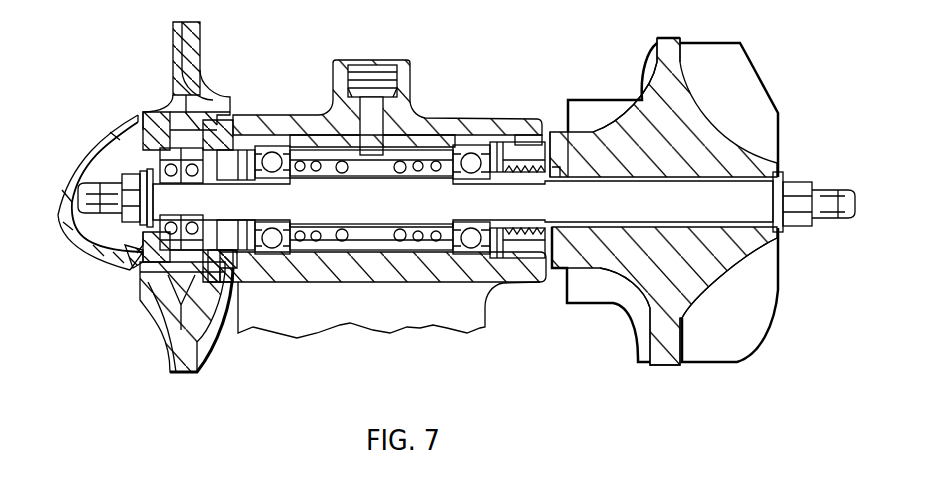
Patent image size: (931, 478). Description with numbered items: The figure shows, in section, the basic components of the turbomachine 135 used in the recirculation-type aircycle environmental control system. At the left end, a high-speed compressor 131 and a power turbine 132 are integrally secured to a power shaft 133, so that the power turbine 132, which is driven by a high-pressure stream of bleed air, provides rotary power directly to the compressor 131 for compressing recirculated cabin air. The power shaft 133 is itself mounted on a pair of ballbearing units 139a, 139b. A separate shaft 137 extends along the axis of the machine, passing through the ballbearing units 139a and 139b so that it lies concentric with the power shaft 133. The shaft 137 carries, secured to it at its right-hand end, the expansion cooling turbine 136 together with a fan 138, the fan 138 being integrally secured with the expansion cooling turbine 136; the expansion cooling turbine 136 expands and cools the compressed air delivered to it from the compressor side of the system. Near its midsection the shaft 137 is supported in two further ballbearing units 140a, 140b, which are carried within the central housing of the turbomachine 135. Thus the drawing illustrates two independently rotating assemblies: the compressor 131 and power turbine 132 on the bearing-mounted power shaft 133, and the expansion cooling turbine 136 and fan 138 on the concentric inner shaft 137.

The high-speed compressor 131 is at (177, 303).
The power turbine 132 is at (197, 308).
The power shaft 133 is at (152, 118).
The turbomachine 135 is at (80, 142).
The expansion cooling turbine 136 is at (640, 124).
The shaft 137 is at (738, 212).
The fan 138 is at (700, 142).
The ballbearing unit 139a is at (135, 237).
The ballbearing unit 139b is at (240, 278).
The ballbearing unit 140a is at (265, 146).
The ballbearing unit 140b is at (462, 150).